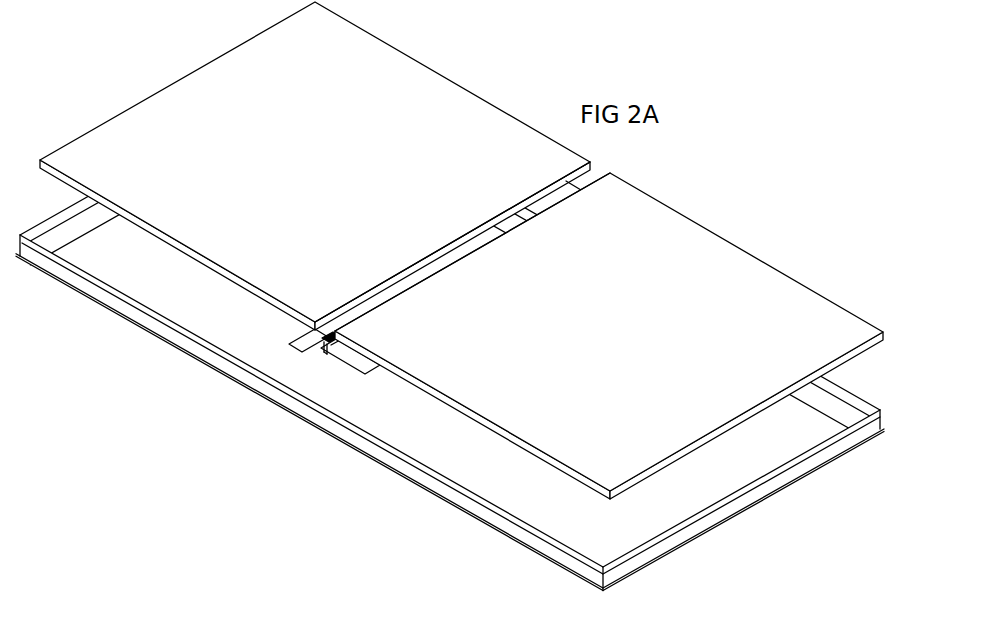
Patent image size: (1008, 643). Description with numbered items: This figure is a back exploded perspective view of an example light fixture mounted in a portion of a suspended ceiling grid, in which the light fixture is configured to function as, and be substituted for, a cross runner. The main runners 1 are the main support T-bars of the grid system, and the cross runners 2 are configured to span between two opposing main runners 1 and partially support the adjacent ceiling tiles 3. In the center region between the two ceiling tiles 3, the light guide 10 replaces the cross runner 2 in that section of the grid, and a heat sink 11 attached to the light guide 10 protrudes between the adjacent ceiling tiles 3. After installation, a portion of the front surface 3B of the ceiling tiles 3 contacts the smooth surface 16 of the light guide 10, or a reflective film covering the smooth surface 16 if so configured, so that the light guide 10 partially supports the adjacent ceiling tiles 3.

The main runners 1 is at (450, 296).
The cross runners 2 is at (78, 223).
The ceiling tiles 3 is at (361, 175).
The front surface of the ceiling tiles 3B is at (294, 316).
The light guide 10 is at (366, 368).
The heat sink 11 is at (325, 350).
The smooth surface 16 is at (308, 343).